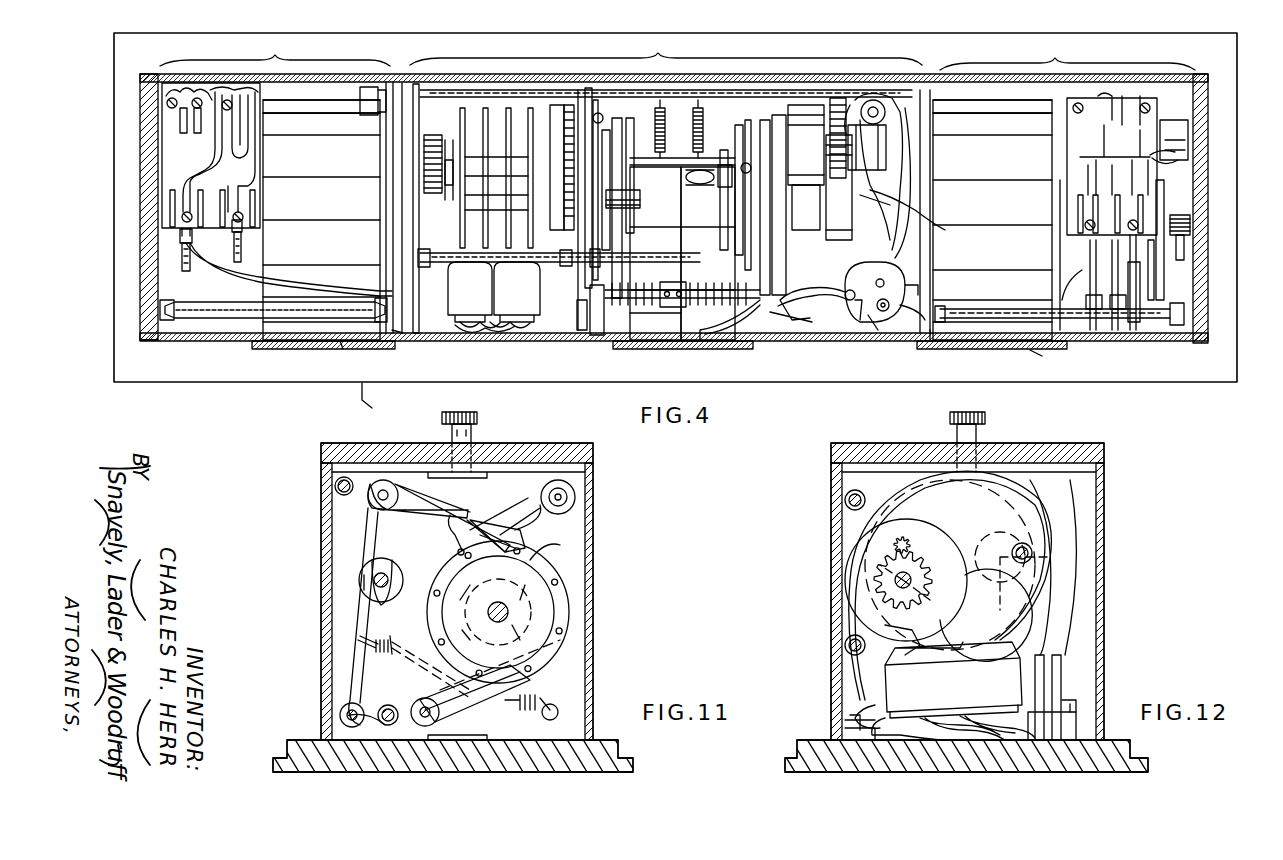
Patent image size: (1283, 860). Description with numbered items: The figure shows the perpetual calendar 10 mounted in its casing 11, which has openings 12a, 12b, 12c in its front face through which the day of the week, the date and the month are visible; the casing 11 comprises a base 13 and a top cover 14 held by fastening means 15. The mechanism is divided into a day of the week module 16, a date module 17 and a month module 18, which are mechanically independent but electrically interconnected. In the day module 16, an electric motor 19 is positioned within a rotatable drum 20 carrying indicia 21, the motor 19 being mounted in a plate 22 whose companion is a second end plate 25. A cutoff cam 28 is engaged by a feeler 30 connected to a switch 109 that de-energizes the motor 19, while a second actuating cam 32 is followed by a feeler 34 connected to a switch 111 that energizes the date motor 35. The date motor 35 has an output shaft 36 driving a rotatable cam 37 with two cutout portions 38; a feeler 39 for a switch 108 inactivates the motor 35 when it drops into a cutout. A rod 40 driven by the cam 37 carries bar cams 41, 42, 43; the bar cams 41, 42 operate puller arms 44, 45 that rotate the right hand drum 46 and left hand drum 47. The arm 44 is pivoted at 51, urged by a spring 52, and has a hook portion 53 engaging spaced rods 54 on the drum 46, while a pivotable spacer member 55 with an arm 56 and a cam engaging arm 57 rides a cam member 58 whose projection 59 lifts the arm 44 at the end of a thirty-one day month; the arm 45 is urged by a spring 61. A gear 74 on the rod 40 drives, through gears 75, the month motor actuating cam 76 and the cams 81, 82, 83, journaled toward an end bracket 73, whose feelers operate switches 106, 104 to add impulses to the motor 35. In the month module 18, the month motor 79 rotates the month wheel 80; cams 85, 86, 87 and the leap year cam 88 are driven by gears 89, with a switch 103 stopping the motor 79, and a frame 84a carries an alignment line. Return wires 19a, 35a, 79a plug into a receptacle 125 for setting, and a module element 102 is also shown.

In FIG. 4, the perpetual calendar 10 is at (256, 402).
In FIG. 11, the perpetual calendar 10 is at (606, 482).
In FIG. 12, the perpetual calendar 10 is at (851, 434).
In FIG. 4, the casing 11 is at (140, 178).
In FIG. 11, the casing 11 is at (321, 553).
In FIG. 12, the casing 11 is at (1104, 553).
In FIG. 4, the opening 12a is at (262, 351).
In FIG. 4, the opening 12b is at (614, 350).
In FIG. 4, the opening 12c is at (1050, 351).
In FIG. 4, the base 13 is at (379, 397).
In FIG. 11, the base 13 is at (453, 756).
In FIG. 12, the base 13 is at (795, 740).
In FIG. 4, the top cover 14 is at (172, 345).
In FIG. 11, the top cover 14 is at (538, 443).
In FIG. 12, the top cover 14 is at (1058, 443).
In FIG. 11, the fastening means 15 is at (477, 426).
In FIG. 12, the fastening means 15 is at (985, 428).
In FIG. 4, the day of the week module 16 is at (275, 51).
In FIG. 4, the date module 17 is at (666, 50).
In FIG. 4, the month module 18 is at (1067, 53).
In FIG. 4, the electric motor 19 is at (396, 334).
In FIG. 4, the return wire 19a is at (800, 330).
In FIG. 4, the rotatable drum 20 is at (262, 321).
In FIG. 4, the indicia 21 is at (340, 350).
In FIG. 4, the plate 22 is at (413, 84).
In FIG. 4, the second end plate 25 is at (180, 238).
In FIG. 4, the cutoff cam 28 is at (182, 267).
In FIG. 4, the feeler 30 is at (182, 232).
In FIG. 4, the second actuating cam 32 is at (236, 262).
In FIG. 4, the feeler 34 is at (234, 232).
In FIG. 4, the date motor 35 is at (885, 100).
In FIG. 4, the return wire 35a is at (955, 228).
In FIG. 4, the output shaft 36 is at (838, 120).
In FIG. 12, the output shaft 36 is at (910, 545).
In FIG. 4, the rotatable cam 37 is at (808, 240).
In FIG. 12, the rotatable cam 37 is at (906, 580).
In FIG. 12, the cutout portions 38 is at (918, 522).
In FIG. 12, the feeler 39 is at (958, 615).
In FIG. 4, the rod 40 is at (676, 156).
In FIG. 4, the bar cam 41 is at (740, 150).
In FIG. 11, the bar cam 41 is at (388, 566).
In FIG. 4, the bar cam 42 is at (622, 168).
In FIG. 4, the bar cam 43 is at (598, 110).
In FIG. 4, the puller arm 44 is at (728, 203).
In FIG. 11, the puller arm 44 is at (428, 500).
In FIG. 4, the puller arm 45 is at (628, 243).
In FIG. 4, the right hand drum 46 is at (705, 318).
In FIG. 4, the left hand drum 47 is at (656, 325).
In FIG. 11, the pivot 51 is at (340, 715).
In FIG. 11, the spring 52 is at (390, 640).
In FIG. 11, the hook portion 53 is at (528, 533).
In FIG. 11, the spaced rods 54 is at (535, 548).
In FIG. 11, the pivotable spacer member 55 is at (502, 510).
In FIG. 11, the arm 56 is at (448, 534).
In FIG. 11, the cam engaging arm 57 is at (455, 556).
In FIG. 11, the cam member 58 is at (569, 588).
In FIG. 11, the projection 59 is at (555, 545).
In FIG. 4, the spring 61 is at (666, 118).
In FIG. 4, the end bracket 73 is at (362, 114).
In FIG. 4, the gear 74 is at (558, 105).
In FIG. 4, the gears 75 is at (434, 138).
In FIG. 4, the month motor actuating cam 76 is at (463, 108).
In FIG. 4, the month motor 79 is at (912, 270).
In FIG. 4, the return wire 79a is at (915, 340).
In FIG. 4, the month wheel 80 is at (1028, 350).
In FIG. 4, the cam 81 is at (486, 108).
In FIG. 4, the cam 82 is at (509, 108).
In FIG. 4, the cam 83 is at (531, 108).
In FIG. 4, the frame 84a is at (1180, 150).
In FIG. 4, the cam 85 is at (1084, 300).
In FIG. 4, the cam 86 is at (1116, 300).
In FIG. 4, the cam 87 is at (1140, 300).
In FIG. 4, the leap year cam 88 is at (1160, 290).
In FIG. 4, the gears 89 is at (1190, 232).
In FIG. 4, the month switch block 102 is at (1122, 100).
In FIG. 4, the switch 103 is at (1066, 112).
In FIG. 4, the switch 104 is at (520, 300).
In FIG. 4, the switch 106 is at (474, 300).
In FIG. 12, the switch 108 is at (962, 684).
In FIG. 4, the switch 109 is at (192, 153).
In FIG. 4, the switch 111 is at (232, 172).
In FIG. 4, the receptacle 125 is at (878, 332).